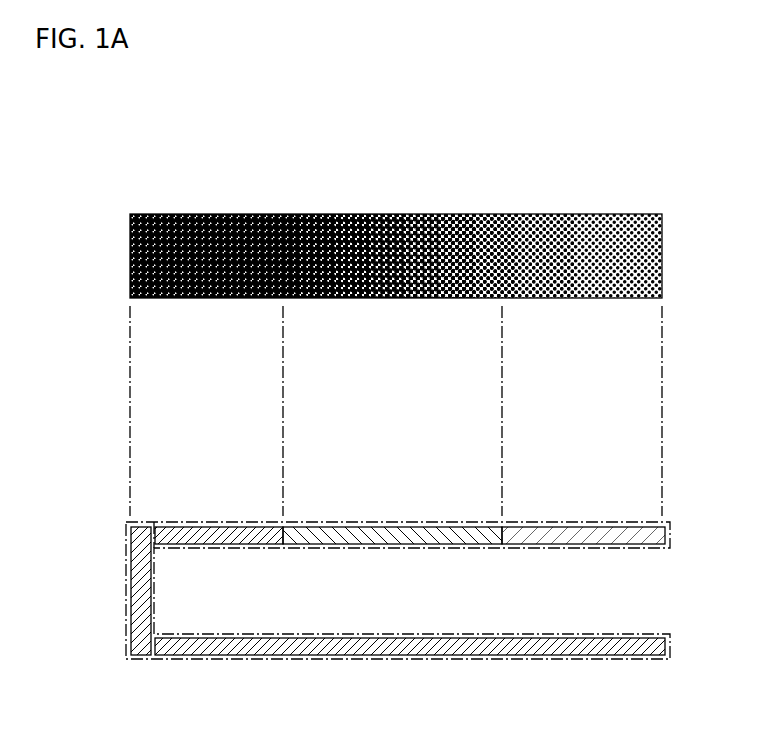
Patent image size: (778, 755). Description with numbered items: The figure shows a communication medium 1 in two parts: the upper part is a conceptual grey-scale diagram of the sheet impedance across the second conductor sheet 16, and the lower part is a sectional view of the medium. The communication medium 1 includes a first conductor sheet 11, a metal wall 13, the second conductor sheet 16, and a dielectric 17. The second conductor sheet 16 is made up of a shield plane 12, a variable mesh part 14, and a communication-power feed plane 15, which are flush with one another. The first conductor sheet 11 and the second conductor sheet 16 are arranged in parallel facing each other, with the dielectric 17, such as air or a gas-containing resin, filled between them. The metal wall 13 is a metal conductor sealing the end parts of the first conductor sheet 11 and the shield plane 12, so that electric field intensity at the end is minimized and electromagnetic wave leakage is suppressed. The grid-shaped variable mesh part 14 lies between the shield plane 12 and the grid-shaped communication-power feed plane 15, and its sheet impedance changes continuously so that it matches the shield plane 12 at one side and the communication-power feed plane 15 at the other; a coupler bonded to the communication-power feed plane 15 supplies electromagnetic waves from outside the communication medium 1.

The communication medium 1 is at (576, 128).
The first conductor sheet 11 is at (408, 660).
The shield plane 12 is at (281, 208).
The metal wall 13 is at (126, 588).
The variable mesh part 14 is at (500, 208).
The communication-power feed plane 15 is at (504, 208).
The second conductor sheet 16 is at (163, 522).
The dielectric 17 is at (428, 607).